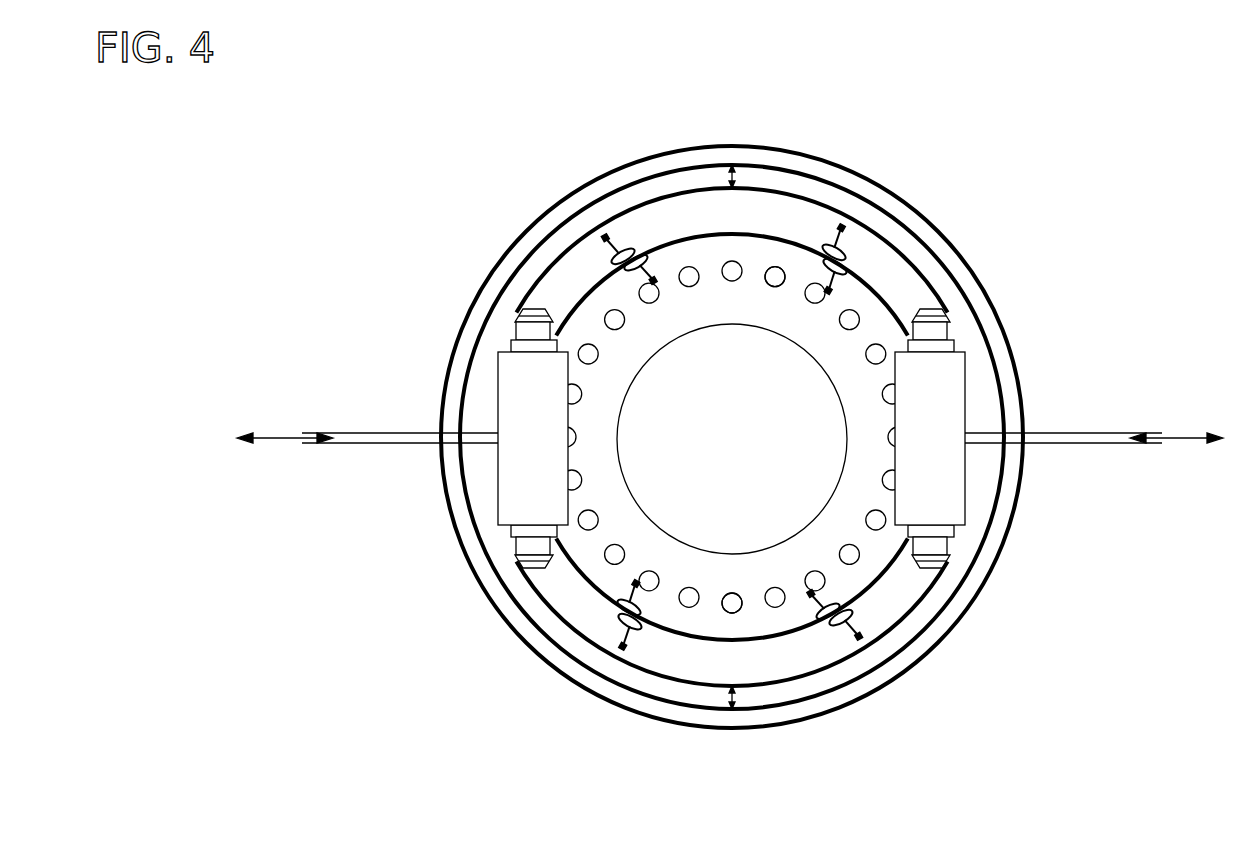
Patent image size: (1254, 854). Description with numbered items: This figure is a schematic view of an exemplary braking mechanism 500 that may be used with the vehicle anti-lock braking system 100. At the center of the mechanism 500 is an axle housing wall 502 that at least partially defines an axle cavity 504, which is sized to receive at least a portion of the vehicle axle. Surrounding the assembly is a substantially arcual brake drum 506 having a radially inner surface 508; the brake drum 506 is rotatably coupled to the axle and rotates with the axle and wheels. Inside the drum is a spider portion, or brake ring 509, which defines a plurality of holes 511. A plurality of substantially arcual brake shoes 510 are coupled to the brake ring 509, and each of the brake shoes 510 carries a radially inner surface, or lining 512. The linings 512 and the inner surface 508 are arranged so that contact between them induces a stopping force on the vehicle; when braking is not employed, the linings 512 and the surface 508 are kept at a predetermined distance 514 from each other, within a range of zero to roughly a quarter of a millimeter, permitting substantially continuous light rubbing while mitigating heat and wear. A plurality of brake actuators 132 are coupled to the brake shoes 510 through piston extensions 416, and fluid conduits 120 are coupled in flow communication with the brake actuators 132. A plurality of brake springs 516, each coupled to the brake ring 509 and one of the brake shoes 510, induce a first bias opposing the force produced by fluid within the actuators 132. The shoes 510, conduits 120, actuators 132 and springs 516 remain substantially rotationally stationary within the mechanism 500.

The vehicle anti-lock braking system 100 is at (410, 195).
The braking mechanism 500 is at (380, 243).
The fluid conduits 120 is at (360, 433).
The brake actuators 132 is at (554, 405).
The piston extensions 416 is at (536, 320).
The axle housing wall 502 is at (826, 367).
The axle cavity 504 is at (766, 461).
The brake drum 506 is at (920, 215).
The radially inner surface 508 is at (565, 228).
The brake ring 509 is at (731, 314).
The brake shoes 510 is at (754, 227).
The holes 511 is at (777, 268).
The lining 512 is at (660, 193).
The predetermined distance 514 is at (737, 168).
The brake springs 516 is at (847, 250).